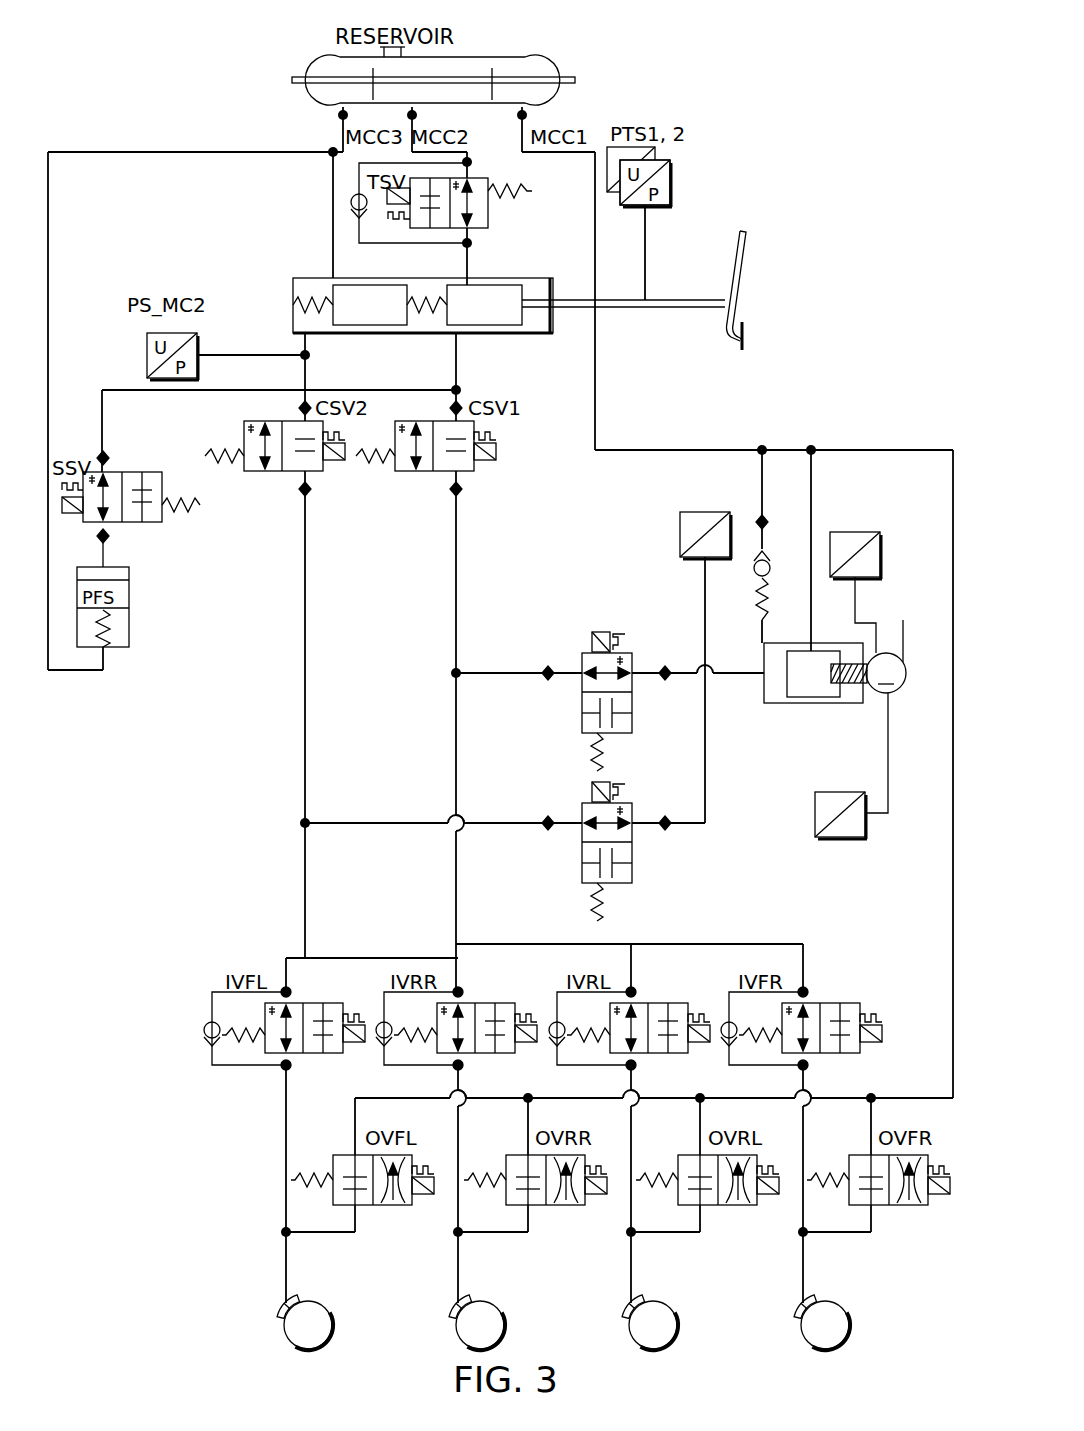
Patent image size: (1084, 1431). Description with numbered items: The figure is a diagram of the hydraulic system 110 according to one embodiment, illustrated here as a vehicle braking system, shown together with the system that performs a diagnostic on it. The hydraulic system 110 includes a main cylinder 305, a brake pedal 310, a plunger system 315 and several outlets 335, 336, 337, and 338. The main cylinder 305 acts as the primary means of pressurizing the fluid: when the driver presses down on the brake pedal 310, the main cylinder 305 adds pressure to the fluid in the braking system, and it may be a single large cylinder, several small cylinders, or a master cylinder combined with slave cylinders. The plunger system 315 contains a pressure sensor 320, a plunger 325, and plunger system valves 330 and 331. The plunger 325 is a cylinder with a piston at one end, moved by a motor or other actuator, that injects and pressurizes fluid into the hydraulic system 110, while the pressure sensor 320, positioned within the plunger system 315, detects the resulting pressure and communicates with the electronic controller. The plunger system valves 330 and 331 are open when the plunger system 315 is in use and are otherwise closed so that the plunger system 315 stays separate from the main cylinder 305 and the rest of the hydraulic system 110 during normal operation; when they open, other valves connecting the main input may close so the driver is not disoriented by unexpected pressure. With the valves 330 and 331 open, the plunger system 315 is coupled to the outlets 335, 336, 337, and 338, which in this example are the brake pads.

The hydraulic system 110 is at (130, 64).
The main cylinder 305 is at (308, 253).
The brake pedal 310 is at (744, 266).
The plunger system 315 is at (913, 547).
The pressure sensor 320 is at (680, 531).
The plunger 325 is at (840, 703).
The plunger system valve 330 is at (582, 861).
The plunger system valve 331 is at (582, 711).
The outlet 335 is at (332, 1325).
The outlet 336 is at (504, 1325).
The outlet 337 is at (677, 1325).
The outlet 338 is at (849, 1325).